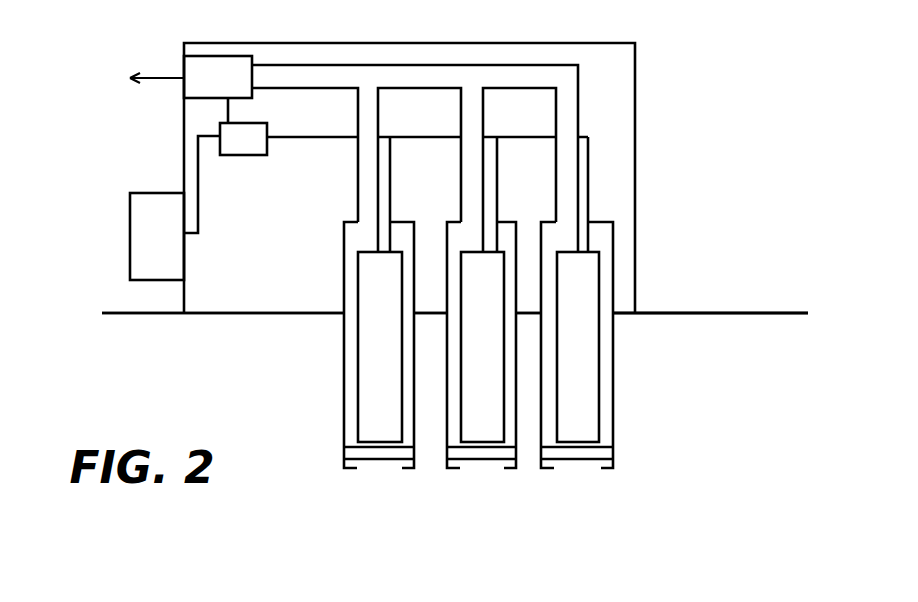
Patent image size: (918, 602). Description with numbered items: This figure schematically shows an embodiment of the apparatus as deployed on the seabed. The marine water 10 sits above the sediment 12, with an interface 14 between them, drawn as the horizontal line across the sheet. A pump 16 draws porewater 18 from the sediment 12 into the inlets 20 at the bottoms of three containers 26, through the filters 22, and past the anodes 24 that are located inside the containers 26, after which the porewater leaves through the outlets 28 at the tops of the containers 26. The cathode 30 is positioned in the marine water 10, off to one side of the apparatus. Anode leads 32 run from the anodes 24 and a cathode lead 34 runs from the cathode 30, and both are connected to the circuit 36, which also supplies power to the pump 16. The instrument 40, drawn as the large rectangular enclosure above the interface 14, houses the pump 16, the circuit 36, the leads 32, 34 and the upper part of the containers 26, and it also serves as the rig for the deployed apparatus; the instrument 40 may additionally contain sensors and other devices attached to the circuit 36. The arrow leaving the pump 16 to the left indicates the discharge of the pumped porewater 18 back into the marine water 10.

The marine water 10 is at (708, 299).
The sediment 12 is at (708, 349).
The interface 14 is at (775, 310).
The pump 16 is at (204, 87).
The porewater 18 is at (440, 401).
The inlets 20 is at (378, 468).
The filters 22 is at (350, 445).
The anodes 24 is at (565, 304).
The containers 26 is at (343, 278).
The outlets 28 is at (352, 212).
The cathode 30 is at (145, 251).
The anode leads 32 is at (588, 188).
The cathode lead 34 is at (197, 167).
The circuit 36 is at (256, 149).
The instrument 40 is at (637, 85).